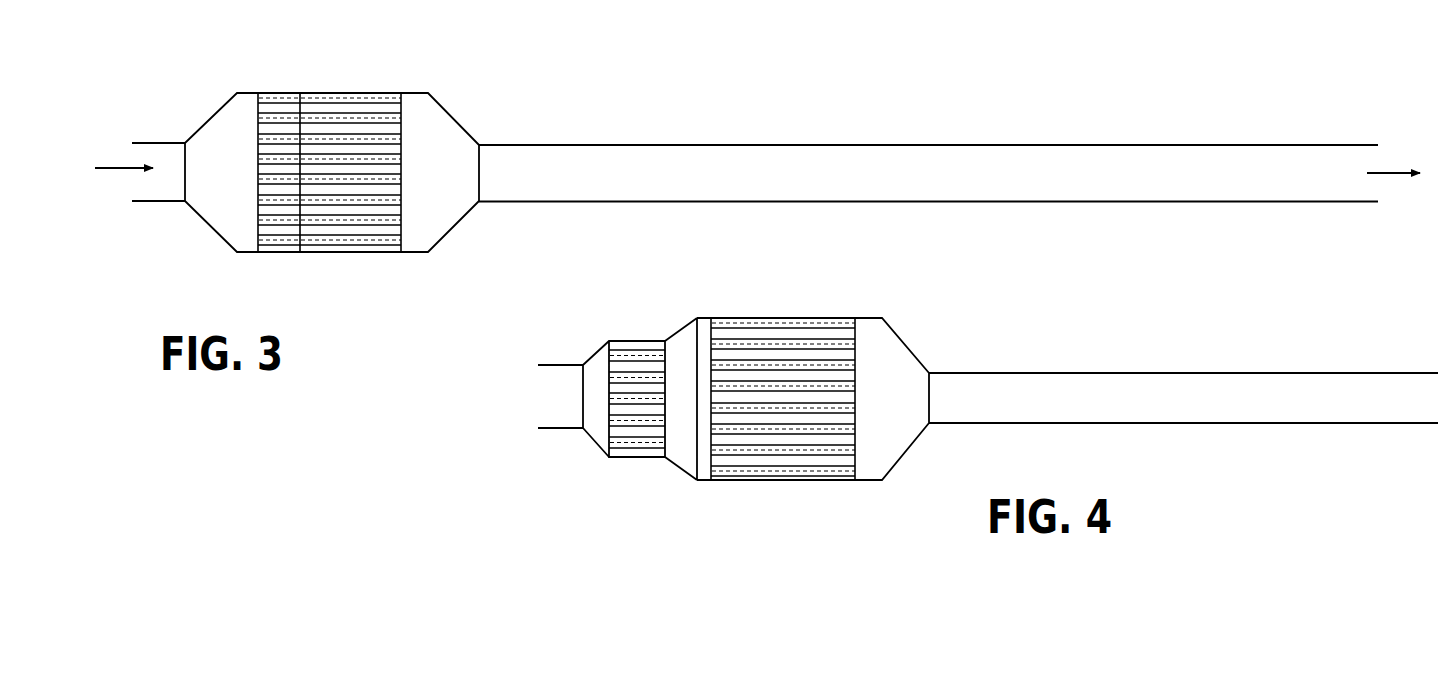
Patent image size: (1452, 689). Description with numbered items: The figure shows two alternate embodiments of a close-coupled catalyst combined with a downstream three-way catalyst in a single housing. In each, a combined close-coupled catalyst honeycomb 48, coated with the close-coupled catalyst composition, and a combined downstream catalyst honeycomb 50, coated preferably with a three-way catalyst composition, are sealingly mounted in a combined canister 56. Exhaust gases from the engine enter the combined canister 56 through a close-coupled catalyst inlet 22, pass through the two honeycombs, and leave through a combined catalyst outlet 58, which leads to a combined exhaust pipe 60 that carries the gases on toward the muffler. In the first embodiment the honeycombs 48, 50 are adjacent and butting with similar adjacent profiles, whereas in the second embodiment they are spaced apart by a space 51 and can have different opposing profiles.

In FIG. 3, the close-coupled catalyst inlet 22 is at (185, 143).
In FIG. 4, the close-coupled catalyst inlet 22 is at (583, 365).
In FIG. 3, the combined close-coupled catalyst honeycomb 48 is at (290, 102).
In FIG. 4, the combined close-coupled catalyst honeycomb 48 is at (633, 355).
In FIG. 3, the combined downstream catalyst honeycomb 50 is at (367, 108).
In FIG. 4, the combined downstream catalyst honeycomb 50 is at (803, 337).
In FIG. 4, the space 51 is at (685, 442).
In FIG. 3, the combined canister 56 is at (417, 252).
In FIG. 4, the combined canister 56 is at (698, 315).
In FIG. 3, the combined catalyst outlet 58 is at (479, 145).
In FIG. 3, the combined exhaust pipe 60 is at (788, 145).
In FIG. 4, the combined exhaust pipe 60 is at (1197, 373).